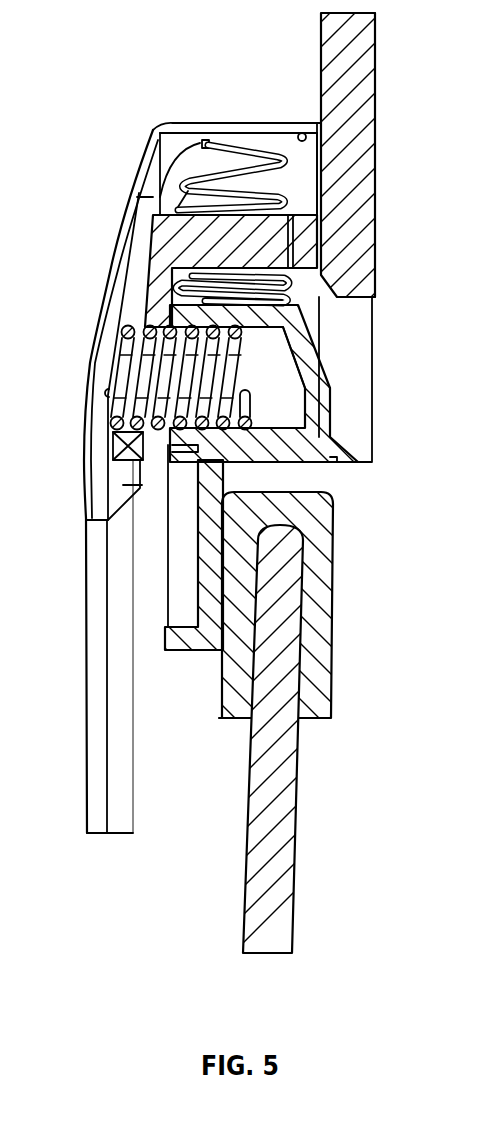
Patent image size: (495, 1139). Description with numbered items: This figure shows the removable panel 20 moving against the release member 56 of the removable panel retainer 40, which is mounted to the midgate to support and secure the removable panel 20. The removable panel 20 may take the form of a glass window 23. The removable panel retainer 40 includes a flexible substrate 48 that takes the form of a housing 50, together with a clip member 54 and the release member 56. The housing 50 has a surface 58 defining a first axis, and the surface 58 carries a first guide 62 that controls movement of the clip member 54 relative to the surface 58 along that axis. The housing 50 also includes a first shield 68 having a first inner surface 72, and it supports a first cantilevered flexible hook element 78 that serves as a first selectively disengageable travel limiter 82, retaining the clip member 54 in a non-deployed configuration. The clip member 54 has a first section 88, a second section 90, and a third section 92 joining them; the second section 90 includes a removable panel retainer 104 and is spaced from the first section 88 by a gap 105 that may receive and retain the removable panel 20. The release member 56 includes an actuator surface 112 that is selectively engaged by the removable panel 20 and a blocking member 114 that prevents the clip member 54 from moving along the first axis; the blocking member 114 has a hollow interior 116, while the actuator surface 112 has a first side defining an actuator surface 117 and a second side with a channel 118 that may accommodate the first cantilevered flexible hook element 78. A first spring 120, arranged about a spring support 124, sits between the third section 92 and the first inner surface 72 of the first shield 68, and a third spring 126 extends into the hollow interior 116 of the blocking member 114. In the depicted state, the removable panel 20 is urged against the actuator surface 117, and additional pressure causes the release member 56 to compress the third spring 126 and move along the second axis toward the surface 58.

The removable panel 20 is at (300, 823).
The glass window 23 is at (299, 750).
The removable panel retainer 40 is at (152, 58).
The flexible substrate 48 is at (118, 278).
The housing 50 is at (144, 118).
The clip member 54 is at (381, 76).
The release member 56 is at (341, 407).
The surface 58 is at (107, 670).
The first guide 62 is at (133, 730).
The first shield 68 is at (218, 130).
The first inner surface 72 is at (300, 133).
The first cantilevered flexible hook element 78 is at (110, 400).
The first selectively disengageable travel limiter 82 is at (123, 485).
The first section 88 is at (128, 312).
The second section 90 is at (358, 120).
The third section 92 is at (157, 250).
The removable panel retainer 104 is at (372, 432).
The gap 105 is at (293, 287).
The actuator surface 112 is at (233, 474).
The blocking member 114 is at (320, 360).
The hollow interior 116 is at (350, 460).
The actuator surface 117 is at (148, 432).
The channel 118 is at (135, 445).
The first spring 120 is at (175, 170).
The spring support 124 is at (177, 197).
The third spring 126 is at (126, 345).